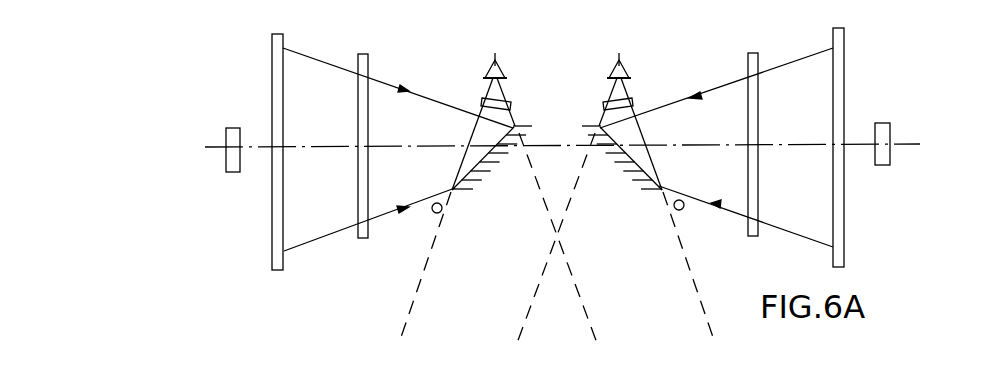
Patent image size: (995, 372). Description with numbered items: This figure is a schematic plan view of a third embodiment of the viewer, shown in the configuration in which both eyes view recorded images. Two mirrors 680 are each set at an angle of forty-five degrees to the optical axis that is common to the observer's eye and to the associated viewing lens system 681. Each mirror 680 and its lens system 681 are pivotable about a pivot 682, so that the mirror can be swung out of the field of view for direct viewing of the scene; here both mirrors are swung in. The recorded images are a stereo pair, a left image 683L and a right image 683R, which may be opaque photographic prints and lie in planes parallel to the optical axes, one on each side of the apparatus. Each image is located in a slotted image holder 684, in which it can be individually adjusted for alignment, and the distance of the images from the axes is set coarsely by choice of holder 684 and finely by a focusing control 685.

The mirror 680 is at (463, 188).
The viewing lens system 681 is at (605, 99).
The pivot 682 is at (431, 214).
The recorded image 683R is at (284, 68).
The recorded image 683L is at (833, 63).
The image holder 684 is at (753, 52).
The focusing control 685 is at (882, 123).